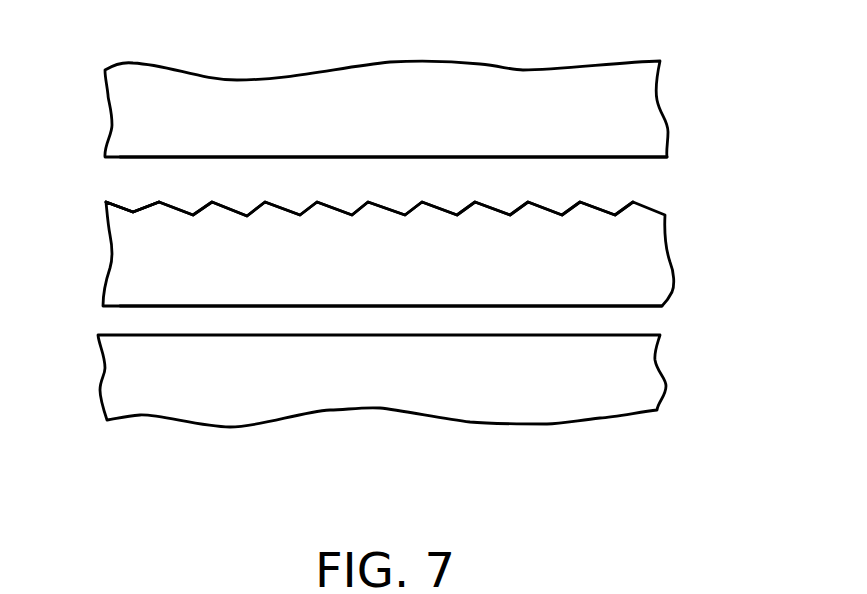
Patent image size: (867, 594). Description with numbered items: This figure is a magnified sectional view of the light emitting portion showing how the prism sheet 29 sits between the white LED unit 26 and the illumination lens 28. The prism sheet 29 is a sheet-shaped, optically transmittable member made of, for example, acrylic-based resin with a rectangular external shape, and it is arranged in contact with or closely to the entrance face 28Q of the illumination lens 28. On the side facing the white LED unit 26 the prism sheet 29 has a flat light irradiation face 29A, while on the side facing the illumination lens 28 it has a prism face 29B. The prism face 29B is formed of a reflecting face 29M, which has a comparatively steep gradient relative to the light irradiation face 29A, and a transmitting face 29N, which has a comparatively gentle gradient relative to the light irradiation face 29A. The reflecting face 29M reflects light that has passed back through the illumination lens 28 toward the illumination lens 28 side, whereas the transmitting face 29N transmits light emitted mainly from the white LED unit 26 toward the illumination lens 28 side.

The white LED unit 26 is at (513, 392).
The illumination lens 28 is at (513, 82).
The entrance face 28Q is at (635, 158).
The prism sheet 29 is at (645, 258).
The light irradiation face 29A is at (643, 308).
The prism face 29B is at (660, 193).
The reflecting face 29M is at (133, 210).
The transmitting face 29N is at (222, 205).